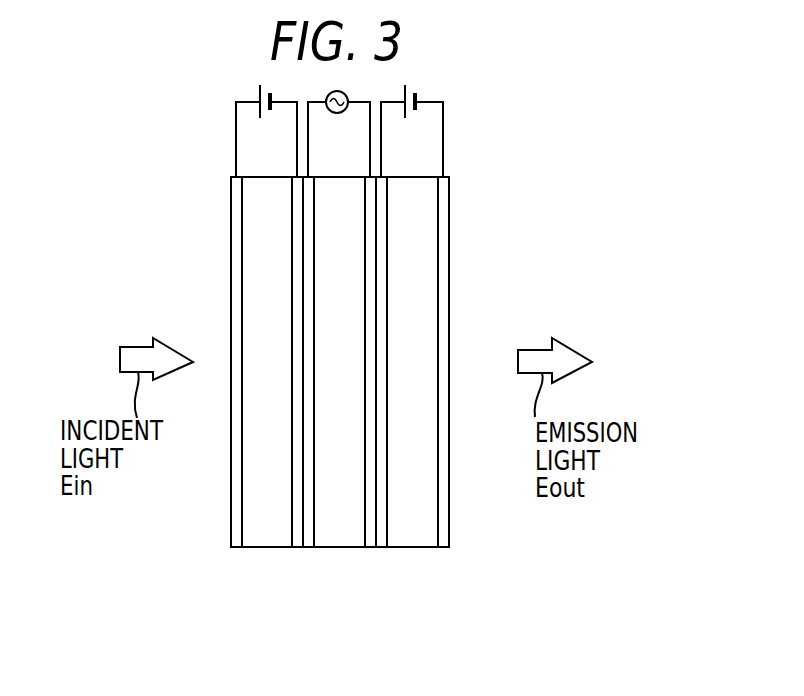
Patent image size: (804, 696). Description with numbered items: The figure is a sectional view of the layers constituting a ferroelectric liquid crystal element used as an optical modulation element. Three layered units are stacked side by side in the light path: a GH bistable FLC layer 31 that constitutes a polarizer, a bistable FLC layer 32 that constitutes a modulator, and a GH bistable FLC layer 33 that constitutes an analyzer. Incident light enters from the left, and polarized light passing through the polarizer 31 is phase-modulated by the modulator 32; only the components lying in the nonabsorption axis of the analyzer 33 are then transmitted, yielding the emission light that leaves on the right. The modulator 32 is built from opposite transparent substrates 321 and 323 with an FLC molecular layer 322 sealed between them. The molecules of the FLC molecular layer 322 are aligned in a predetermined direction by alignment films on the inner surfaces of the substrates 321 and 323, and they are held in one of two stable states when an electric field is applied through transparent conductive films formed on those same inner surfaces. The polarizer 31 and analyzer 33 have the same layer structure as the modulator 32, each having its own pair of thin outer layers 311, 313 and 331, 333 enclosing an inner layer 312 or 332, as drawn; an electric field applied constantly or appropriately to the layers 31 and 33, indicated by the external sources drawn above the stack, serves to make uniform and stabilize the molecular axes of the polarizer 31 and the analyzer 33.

The GH bistable FLC layer 31 is at (251, 421).
The first transparent electrode 311 is at (235, 547).
The first electro-optic layer 312 is at (258, 547).
The second transparent electrode 313 is at (280, 384).
The bistable FLC layer 32 is at (337, 421).
The transparent substrate 321 is at (308, 547).
The FLC molecular layer 322 is at (337, 547).
The transparent substrate 323 is at (370, 547).
The GH bistable FLC layer 33 is at (422, 421).
The fifth transparent electrode 331 is at (382, 547).
The third electro-optic layer 332 is at (417, 547).
The sixth transparent electrode 333 is at (442, 547).